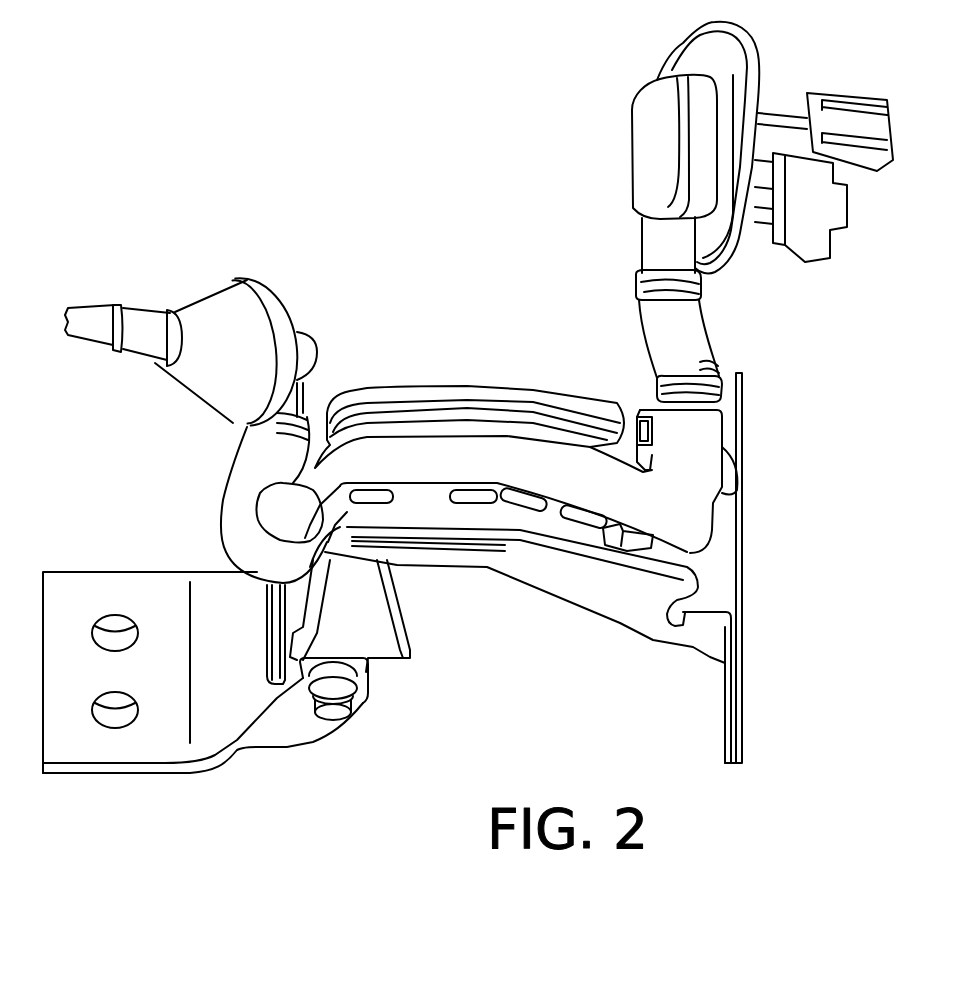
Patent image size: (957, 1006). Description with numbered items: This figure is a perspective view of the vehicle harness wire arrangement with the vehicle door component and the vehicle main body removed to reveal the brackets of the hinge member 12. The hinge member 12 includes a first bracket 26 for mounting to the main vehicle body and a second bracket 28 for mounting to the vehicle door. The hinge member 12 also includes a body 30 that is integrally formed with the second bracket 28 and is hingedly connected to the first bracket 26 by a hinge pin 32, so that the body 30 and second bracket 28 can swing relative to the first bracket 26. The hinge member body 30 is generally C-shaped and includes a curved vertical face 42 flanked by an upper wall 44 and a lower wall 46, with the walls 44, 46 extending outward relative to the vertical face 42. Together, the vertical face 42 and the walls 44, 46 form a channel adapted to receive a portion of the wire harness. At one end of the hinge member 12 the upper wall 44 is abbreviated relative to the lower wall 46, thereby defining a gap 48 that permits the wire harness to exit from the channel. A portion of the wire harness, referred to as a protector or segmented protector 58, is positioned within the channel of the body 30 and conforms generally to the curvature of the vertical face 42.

The hinge member 12 is at (553, 630).
The first bracket 26 is at (120, 747).
The second bracket 28 is at (733, 666).
The body 30 is at (469, 381).
The hinge pin 32 is at (333, 710).
The curved vertical face 42 is at (442, 420).
The upper wall 44 is at (535, 390).
The lower wall 46 is at (497, 533).
The gap 48 is at (632, 405).
The segmented protector 58 is at (283, 513).